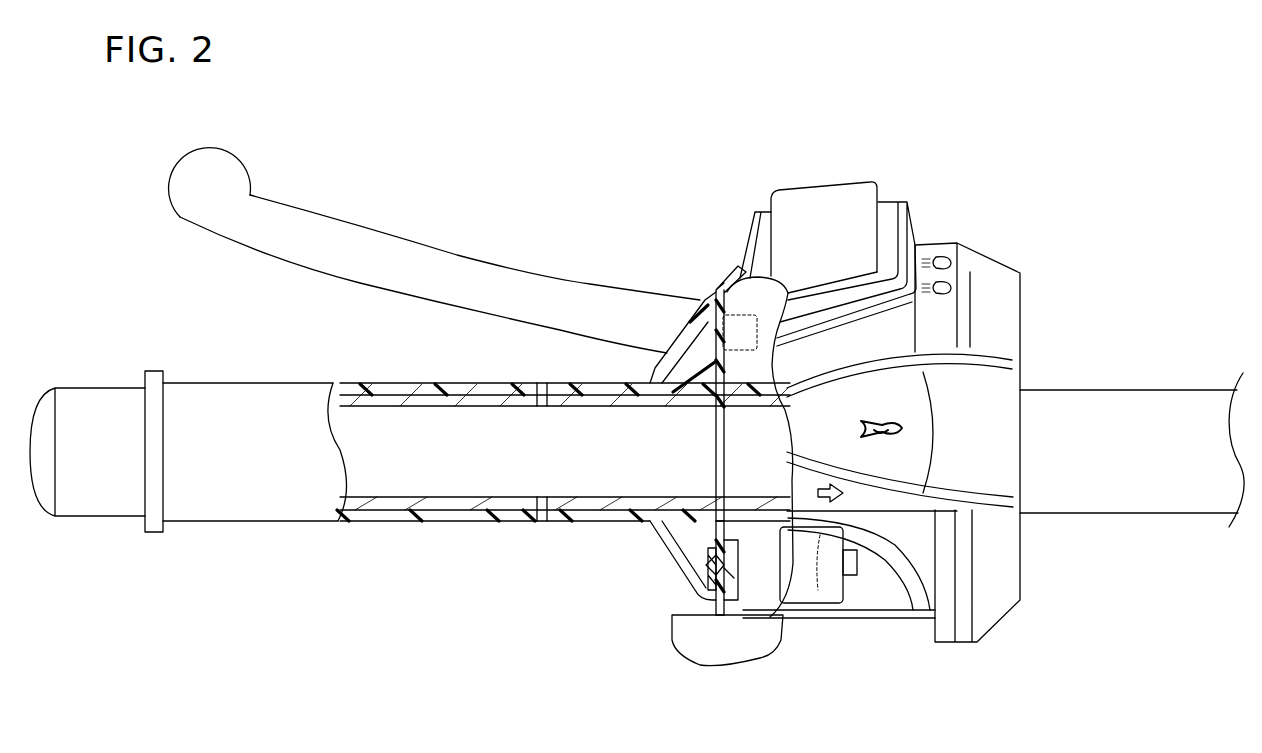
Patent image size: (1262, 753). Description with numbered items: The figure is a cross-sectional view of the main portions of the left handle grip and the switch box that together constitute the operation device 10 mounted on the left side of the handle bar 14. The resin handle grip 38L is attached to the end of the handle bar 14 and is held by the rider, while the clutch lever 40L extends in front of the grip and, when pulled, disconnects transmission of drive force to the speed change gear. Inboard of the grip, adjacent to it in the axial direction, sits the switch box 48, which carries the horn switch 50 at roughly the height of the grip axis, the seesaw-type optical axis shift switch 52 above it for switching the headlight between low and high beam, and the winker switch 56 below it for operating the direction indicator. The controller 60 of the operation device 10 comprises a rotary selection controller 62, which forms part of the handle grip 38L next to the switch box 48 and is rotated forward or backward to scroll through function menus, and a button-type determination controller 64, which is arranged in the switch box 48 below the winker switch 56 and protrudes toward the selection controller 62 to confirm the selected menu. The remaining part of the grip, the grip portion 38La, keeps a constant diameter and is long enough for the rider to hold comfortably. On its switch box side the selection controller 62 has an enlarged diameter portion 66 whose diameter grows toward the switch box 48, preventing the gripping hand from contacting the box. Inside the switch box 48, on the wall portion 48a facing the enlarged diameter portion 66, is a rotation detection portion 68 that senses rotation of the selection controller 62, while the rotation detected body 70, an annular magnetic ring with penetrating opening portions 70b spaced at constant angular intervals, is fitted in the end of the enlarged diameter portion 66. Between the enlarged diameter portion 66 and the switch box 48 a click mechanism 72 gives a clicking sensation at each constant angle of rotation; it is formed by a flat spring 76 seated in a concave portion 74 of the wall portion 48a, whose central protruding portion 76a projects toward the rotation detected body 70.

The operation device 10 is at (866, 152).
The handle bar 14 is at (1098, 388).
The left handle grip 38L is at (226, 530).
The grip portion 38La is at (212, 403).
The clutch lever 40L is at (268, 212).
The switch box 48 is at (988, 265).
The wall portion 48a is at (728, 375).
The horn switch 50 is at (920, 414).
The optical axis shift switch 52 is at (872, 178).
The winker switch 56 is at (806, 604).
The controller 60 is at (572, 578).
The selection controller 62 is at (606, 530).
The determination controller 64 is at (670, 627).
The enlarged diameter portion 66 is at (697, 340).
The rotation detection portion 68 is at (775, 350).
The rotation detected body 70 is at (708, 312).
The opening portions 70b is at (716, 560).
The click mechanism 72 is at (719, 618).
The concave portion 74 is at (730, 581).
The flat spring 76 is at (726, 565).
The protruding portion 76a is at (712, 568).